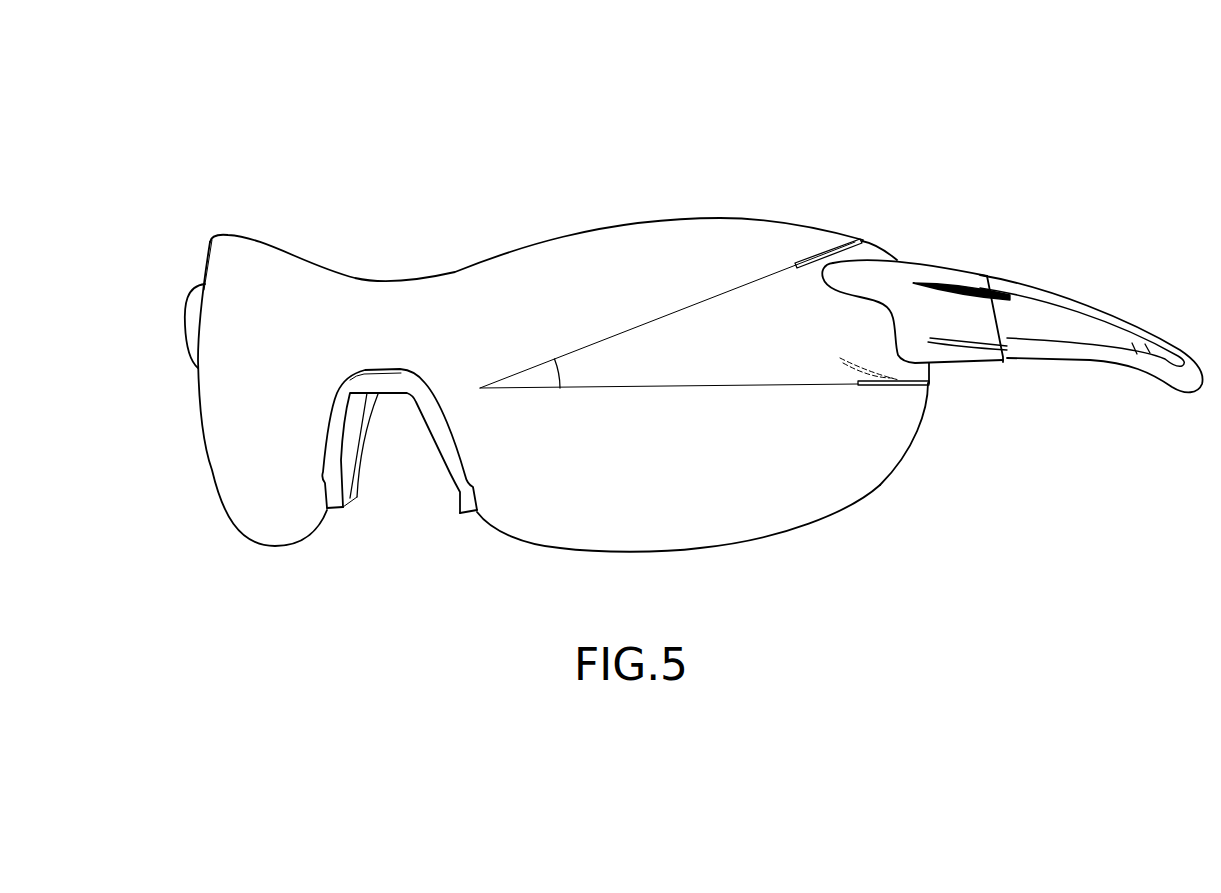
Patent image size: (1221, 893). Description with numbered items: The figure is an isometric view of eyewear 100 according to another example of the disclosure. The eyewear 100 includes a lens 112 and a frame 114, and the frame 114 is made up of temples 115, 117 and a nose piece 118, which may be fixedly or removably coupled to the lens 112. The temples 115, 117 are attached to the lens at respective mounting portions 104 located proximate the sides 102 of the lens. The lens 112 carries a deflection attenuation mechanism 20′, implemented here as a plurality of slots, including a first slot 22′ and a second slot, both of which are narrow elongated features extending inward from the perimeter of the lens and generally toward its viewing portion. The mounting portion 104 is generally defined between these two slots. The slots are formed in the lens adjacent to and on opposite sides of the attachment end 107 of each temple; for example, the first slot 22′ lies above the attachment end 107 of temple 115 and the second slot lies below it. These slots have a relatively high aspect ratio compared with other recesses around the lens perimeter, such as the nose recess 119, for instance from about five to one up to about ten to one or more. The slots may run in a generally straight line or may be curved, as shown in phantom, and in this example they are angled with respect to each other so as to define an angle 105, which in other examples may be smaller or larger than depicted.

The eyewear 100 is at (950, 106).
The side of the lens 102 is at (945, 428).
The mounting portion 104 is at (861, 326).
The angle 105 is at (562, 375).
The attachment end 107 is at (950, 272).
The lens 112 is at (604, 546).
The frame 114 is at (1113, 440).
The temple 115 is at (1109, 311).
The temple 117 is at (190, 288).
The nose piece 118 is at (340, 498).
The nose recess 119 is at (433, 517).
The deflection attenuation mechanism 20′ is at (760, 322).
The first slot 22′ is at (843, 236).